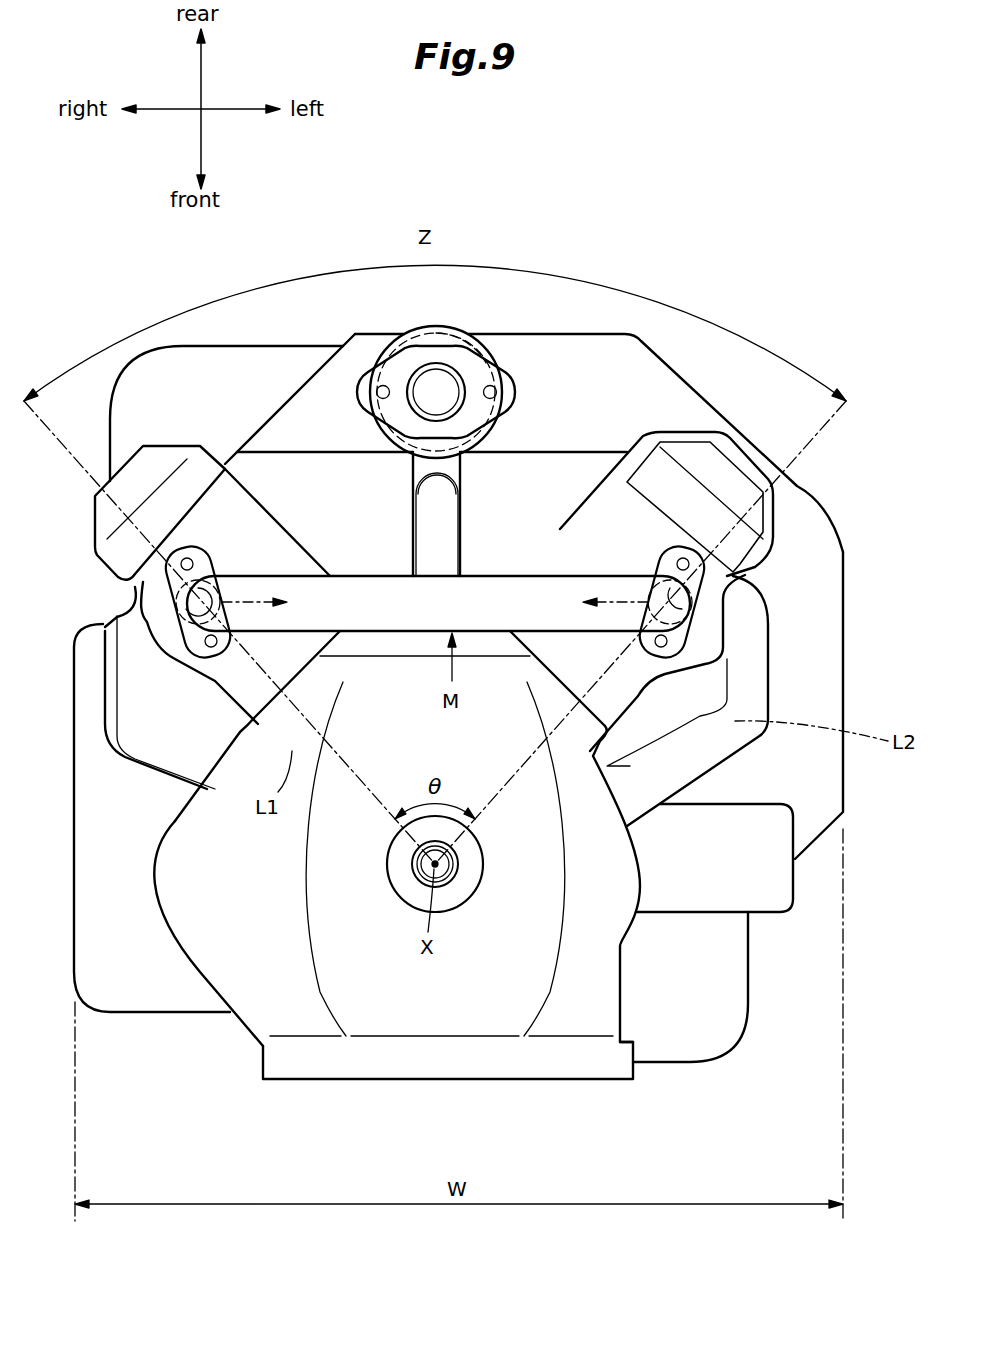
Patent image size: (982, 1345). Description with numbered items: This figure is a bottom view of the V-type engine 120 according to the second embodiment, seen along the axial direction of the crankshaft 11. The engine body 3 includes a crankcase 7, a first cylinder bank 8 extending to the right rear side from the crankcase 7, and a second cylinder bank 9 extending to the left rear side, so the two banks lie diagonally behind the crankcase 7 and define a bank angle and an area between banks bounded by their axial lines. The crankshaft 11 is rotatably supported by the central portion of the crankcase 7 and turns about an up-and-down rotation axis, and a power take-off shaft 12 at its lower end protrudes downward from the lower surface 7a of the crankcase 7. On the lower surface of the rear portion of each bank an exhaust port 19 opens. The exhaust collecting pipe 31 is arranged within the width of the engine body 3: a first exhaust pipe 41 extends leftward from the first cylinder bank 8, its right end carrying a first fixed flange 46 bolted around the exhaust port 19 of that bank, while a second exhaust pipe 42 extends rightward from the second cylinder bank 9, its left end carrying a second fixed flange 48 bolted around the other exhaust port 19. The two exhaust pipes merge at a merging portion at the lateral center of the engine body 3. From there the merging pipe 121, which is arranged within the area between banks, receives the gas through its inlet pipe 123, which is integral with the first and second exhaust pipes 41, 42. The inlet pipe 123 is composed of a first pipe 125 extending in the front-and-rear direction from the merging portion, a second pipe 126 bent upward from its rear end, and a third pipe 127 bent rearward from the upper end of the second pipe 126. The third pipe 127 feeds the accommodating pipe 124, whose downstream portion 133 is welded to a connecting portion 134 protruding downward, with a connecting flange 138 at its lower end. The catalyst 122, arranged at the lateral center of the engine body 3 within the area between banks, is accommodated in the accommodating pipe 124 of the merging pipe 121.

The engine body 3 is at (292, 1094).
The crankcase 7 is at (293, 992).
The lower surface of the crankcase 7a is at (499, 1000).
The first cylinder bank 8 is at (143, 623).
The second cylinder bank 9 is at (728, 642).
The crankshaft 11 is at (451, 878).
The power take-off shaft 12 is at (458, 858).
The exhaust port 19 is at (190, 625).
The exhaust collecting pipe 31 is at (382, 640).
The first exhaust pipe 41 is at (302, 548).
The second exhaust pipe 42 is at (577, 577).
The first fixed flange 46 is at (112, 560).
The second fixed flange 48 is at (727, 597).
The V-type engine 120 is at (855, 540).
The merging pipe 121 is at (527, 388).
The catalyst 122 is at (458, 334).
The inlet pipe 123 is at (470, 533).
The accommodating pipe 124 is at (410, 333).
The first pipe 125 is at (462, 500).
The second pipe 126 is at (470, 471).
The third pipe 127 is at (413, 470).
The downstream portion 133 is at (427, 334).
The connecting portion 134 is at (380, 383).
The connecting flange 138 is at (466, 358).